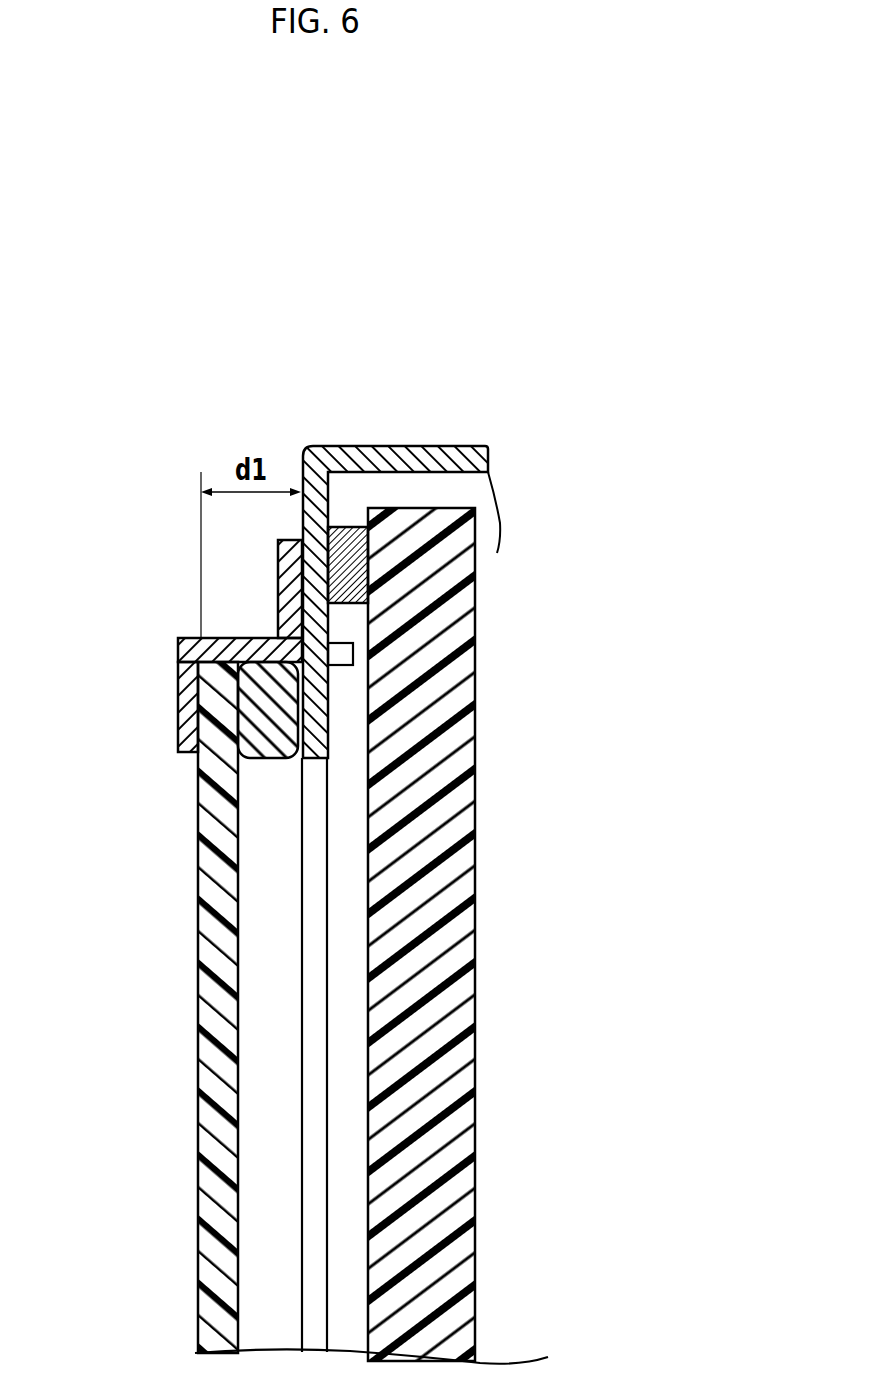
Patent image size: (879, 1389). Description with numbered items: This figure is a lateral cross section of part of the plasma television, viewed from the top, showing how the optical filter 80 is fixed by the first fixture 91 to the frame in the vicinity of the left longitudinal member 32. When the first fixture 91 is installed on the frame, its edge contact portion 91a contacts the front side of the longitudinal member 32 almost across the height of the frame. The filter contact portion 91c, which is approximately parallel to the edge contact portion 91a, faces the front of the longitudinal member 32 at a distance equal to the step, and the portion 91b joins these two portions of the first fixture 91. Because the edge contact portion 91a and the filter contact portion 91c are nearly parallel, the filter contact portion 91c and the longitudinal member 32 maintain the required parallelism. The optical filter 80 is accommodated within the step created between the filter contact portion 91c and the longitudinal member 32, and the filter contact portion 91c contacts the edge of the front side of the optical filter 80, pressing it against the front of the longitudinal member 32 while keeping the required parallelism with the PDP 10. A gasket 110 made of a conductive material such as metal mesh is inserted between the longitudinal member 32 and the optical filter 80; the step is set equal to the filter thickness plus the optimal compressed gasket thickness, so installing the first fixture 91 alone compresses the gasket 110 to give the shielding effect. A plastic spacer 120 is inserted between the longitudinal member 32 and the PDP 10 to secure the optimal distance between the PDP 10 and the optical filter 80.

The PDP 10 is at (476, 940).
The longitudinal member 32 is at (427, 446).
The optical filter 80 is at (198, 1102).
The first fixture 91 is at (178, 640).
The edge contact portion 91a is at (278, 572).
The horizontal portion of seal member 91b is at (236, 637).
The filter contact portion 91c is at (178, 706).
The gasket 110 is at (257, 750).
The spacer 120 is at (352, 527).